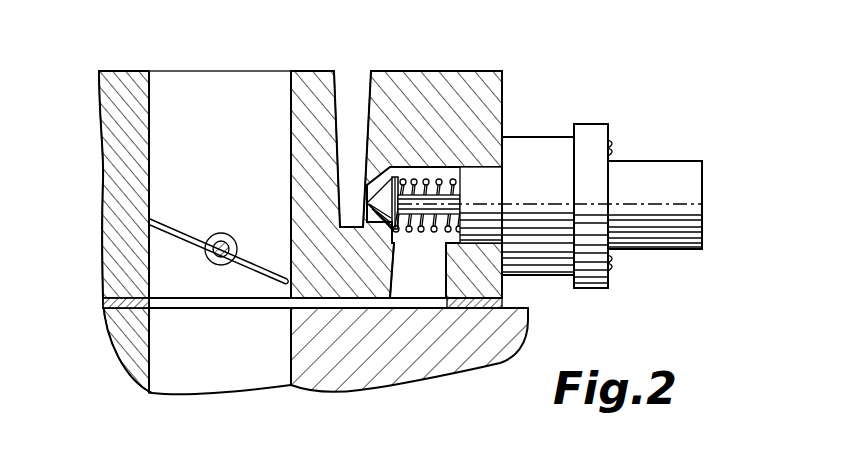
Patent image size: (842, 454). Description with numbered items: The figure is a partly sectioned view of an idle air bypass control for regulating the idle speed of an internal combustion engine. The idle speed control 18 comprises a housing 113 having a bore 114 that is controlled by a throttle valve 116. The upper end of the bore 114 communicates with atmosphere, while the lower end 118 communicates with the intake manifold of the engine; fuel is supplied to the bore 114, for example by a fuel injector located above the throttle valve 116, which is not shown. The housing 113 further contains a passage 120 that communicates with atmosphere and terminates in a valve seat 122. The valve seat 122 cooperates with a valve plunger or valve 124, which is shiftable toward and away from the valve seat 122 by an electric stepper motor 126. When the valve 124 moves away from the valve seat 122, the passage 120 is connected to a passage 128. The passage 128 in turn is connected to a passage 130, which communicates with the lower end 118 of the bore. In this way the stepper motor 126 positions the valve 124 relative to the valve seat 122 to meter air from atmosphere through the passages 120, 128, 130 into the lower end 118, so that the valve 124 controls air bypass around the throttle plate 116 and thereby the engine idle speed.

The idle speed control 18 is at (512, 110).
The housing 113 is at (125, 190).
The bore 114 is at (230, 100).
The throttle valve 116 is at (188, 234).
The lower end 118 is at (252, 362).
The passage 120 is at (352, 88).
The valve seat 122 is at (368, 199).
The valve plunger 124 is at (366, 213).
The electric stepper motor 126 is at (533, 248).
The passage 128 is at (422, 290).
The passage 130 is at (340, 303).